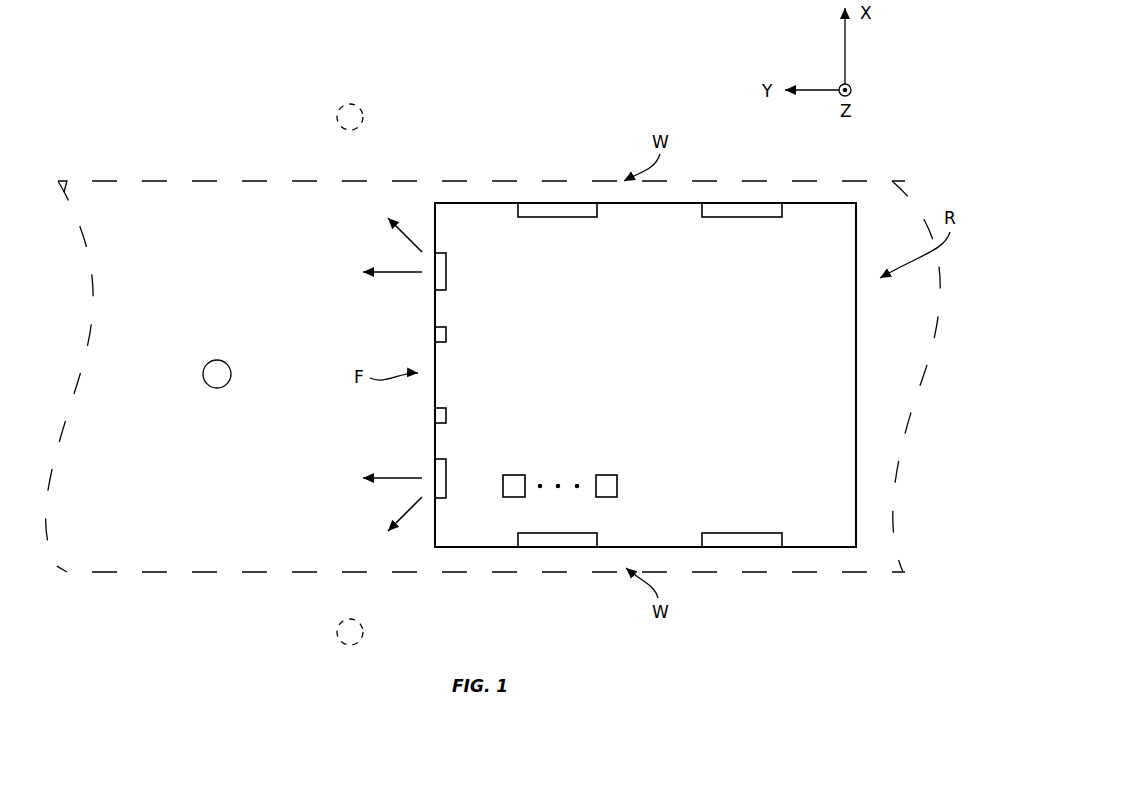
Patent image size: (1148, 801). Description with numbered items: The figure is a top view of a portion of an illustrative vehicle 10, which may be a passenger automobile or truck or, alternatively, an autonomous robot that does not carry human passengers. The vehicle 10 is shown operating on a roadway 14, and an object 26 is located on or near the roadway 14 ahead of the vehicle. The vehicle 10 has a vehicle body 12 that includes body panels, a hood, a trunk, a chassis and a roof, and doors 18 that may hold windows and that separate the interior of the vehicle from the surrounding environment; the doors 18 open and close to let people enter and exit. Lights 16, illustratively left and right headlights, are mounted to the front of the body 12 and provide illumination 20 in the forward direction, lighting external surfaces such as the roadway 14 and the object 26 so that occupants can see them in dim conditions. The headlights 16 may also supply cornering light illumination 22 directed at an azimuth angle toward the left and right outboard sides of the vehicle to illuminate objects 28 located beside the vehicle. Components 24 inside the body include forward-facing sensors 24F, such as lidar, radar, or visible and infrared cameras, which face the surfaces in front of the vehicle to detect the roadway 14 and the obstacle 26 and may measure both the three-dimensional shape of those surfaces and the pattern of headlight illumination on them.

The vehicle 10 is at (560, 141).
The vehicle body 12 is at (832, 548).
The roadway 14 is at (552, 575).
The lights 16 is at (443, 271).
The doors 18 is at (702, 208).
The illumination 20 is at (390, 275).
The cornering light illumination 22 is at (400, 230).
The components 24 is at (605, 475).
The forward-facing sensors 24F is at (446, 333).
The object 26 is at (218, 389).
The objects 28 is at (364, 119).